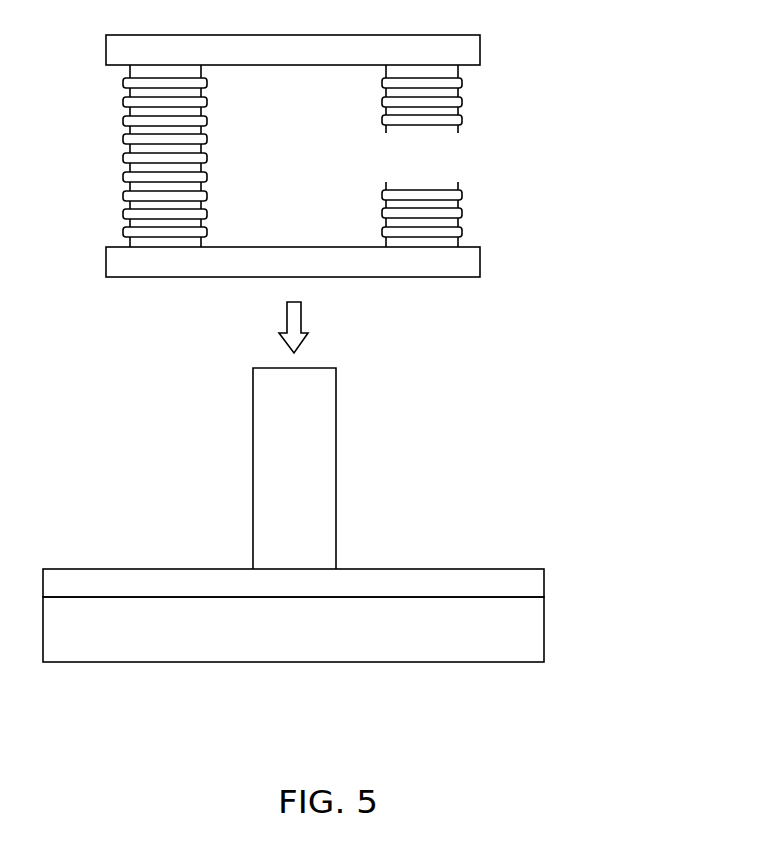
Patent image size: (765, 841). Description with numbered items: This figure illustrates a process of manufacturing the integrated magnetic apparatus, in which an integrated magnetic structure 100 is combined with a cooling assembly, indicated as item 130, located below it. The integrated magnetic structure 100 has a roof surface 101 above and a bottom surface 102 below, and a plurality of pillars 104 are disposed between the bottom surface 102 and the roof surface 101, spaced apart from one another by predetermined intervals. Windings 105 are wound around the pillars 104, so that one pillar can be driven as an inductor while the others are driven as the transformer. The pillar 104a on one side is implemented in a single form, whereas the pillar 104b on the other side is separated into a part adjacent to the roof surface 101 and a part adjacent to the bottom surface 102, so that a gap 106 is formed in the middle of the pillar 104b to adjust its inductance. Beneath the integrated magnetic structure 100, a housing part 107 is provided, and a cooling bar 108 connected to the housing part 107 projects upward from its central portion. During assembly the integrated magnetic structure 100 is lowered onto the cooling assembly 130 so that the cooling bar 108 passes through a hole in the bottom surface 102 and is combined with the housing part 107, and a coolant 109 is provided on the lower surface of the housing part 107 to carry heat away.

The integrated magnetic structure 100 is at (343, 139).
The roof surface 101 is at (473, 50).
The bottom surface 102 is at (475, 258).
The pillar 104 is at (470, 146).
The pillar 104a is at (130, 72).
The pillar 104b is at (457, 73).
The winding 105 is at (457, 80).
The gap 106 is at (438, 156).
The housing part 107 is at (535, 583).
The cooling bar 108 is at (327, 458).
The coolant 109 is at (535, 628).
The pillar structure 130 is at (345, 515).